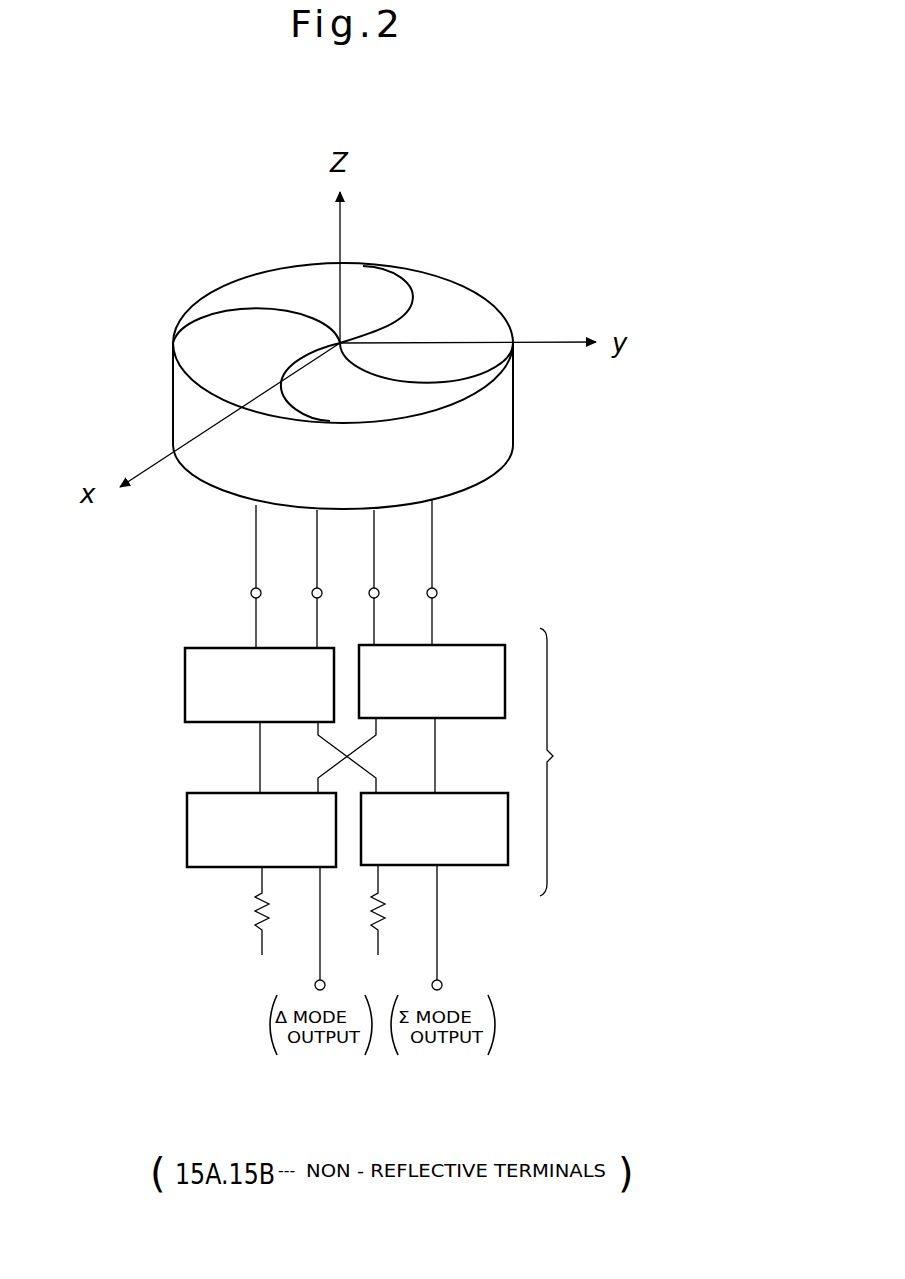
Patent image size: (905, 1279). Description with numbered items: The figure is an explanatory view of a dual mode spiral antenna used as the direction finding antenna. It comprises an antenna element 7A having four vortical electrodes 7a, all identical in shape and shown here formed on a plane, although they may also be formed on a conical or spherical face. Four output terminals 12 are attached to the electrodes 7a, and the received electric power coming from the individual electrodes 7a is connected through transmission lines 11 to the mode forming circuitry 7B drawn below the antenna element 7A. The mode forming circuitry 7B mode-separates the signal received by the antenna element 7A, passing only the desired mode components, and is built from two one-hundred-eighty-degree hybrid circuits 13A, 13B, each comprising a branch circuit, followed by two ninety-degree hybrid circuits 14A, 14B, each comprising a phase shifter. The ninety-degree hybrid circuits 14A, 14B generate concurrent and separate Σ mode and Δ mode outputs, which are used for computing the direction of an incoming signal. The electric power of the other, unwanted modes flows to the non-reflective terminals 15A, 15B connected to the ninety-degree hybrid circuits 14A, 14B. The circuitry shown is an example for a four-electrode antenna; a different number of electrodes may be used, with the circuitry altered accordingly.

The antenna element 7A is at (232, 282).
The vortical electrodes 7a is at (413, 300).
The mode forming circuitry 7B is at (553, 756).
The transmission lines 11 is at (432, 537).
The output terminals 12 is at (437, 591).
The 180° hybrid circuit 13A is at (185, 680).
The 180° hybrid circuit 13B is at (505, 680).
The 90° hybrid circuit 14A is at (187, 831).
The 90° hybrid circuit 14B is at (508, 838).
The non-reflective terminal 15A is at (258, 915).
The non-reflective terminal 15B is at (375, 911).